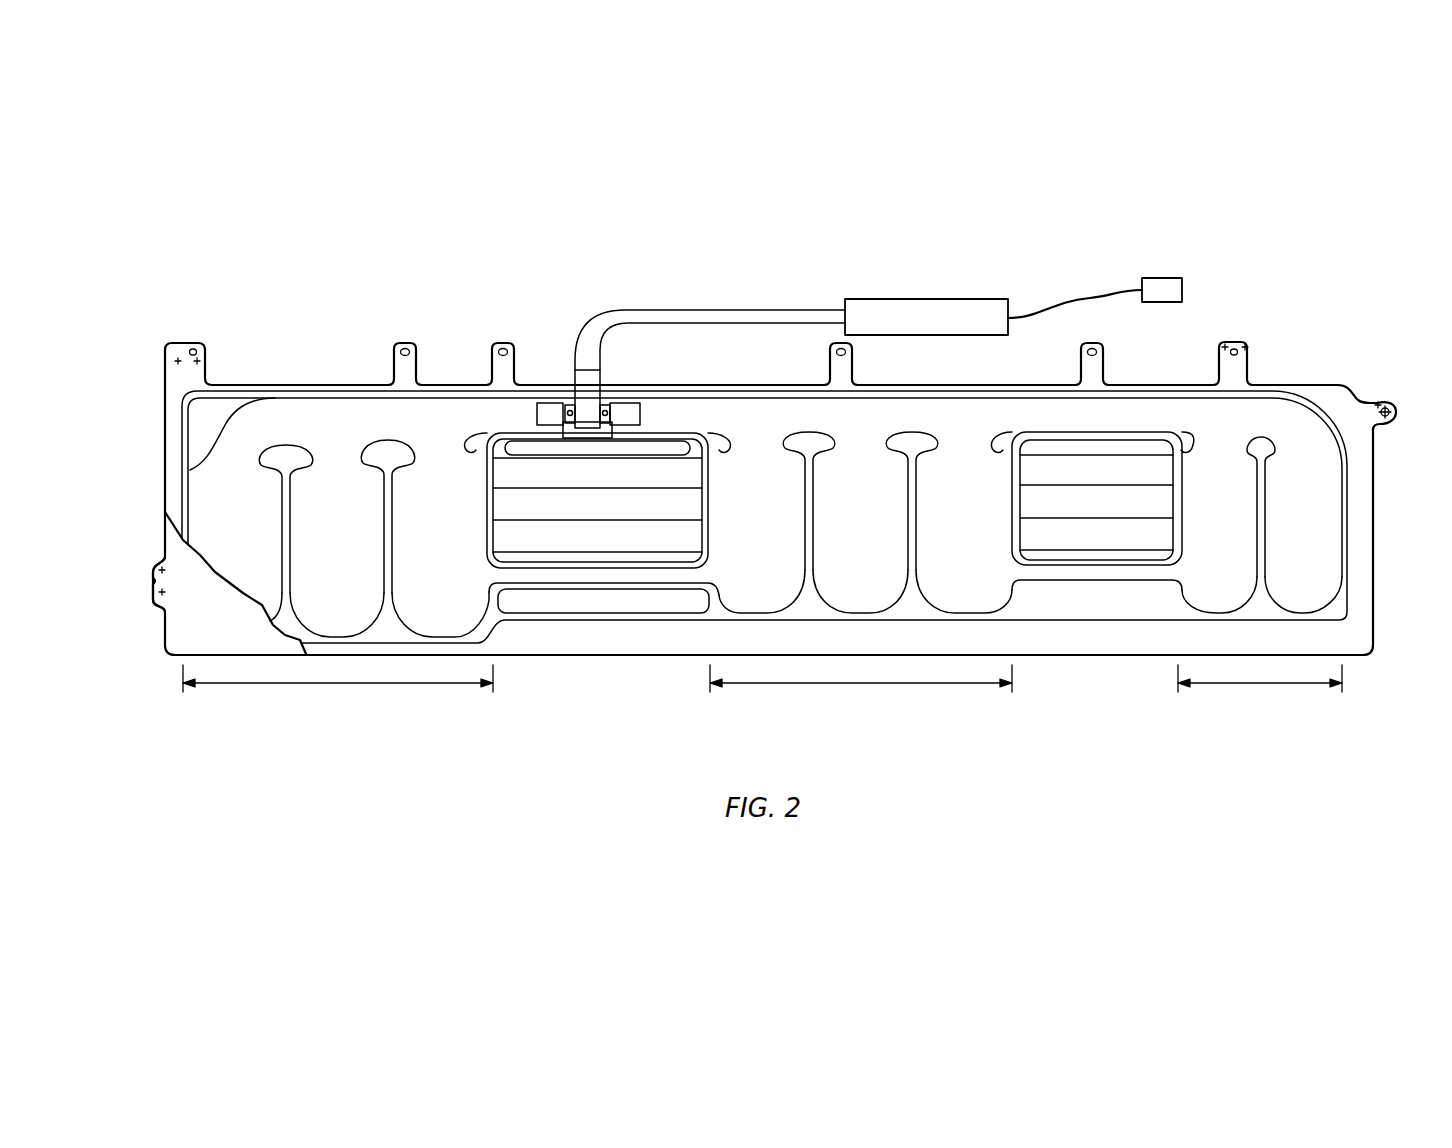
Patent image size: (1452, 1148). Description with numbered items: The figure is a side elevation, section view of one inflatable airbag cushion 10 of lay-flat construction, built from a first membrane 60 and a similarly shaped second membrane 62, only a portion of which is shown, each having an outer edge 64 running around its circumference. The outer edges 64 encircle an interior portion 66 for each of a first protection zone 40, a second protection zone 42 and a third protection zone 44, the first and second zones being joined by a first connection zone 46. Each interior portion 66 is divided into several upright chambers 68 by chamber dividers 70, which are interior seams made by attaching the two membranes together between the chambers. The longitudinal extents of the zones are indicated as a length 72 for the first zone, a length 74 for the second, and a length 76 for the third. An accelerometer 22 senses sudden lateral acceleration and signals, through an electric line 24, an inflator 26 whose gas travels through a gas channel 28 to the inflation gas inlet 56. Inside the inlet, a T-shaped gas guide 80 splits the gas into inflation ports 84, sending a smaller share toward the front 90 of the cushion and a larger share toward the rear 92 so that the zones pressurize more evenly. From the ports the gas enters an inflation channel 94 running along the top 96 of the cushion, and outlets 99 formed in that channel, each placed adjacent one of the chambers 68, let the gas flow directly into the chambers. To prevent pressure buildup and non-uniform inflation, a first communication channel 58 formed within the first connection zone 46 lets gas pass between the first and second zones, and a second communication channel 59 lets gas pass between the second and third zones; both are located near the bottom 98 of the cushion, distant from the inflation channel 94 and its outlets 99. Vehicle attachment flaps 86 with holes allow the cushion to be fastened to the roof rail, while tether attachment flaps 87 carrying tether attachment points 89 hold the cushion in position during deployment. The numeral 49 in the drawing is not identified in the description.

The cushion 10 is at (573, 684).
The accelerometer 22 is at (1162, 283).
The electric line 24 is at (1083, 298).
The inflator 26 is at (933, 312).
The gas channel 28 is at (737, 312).
The first protection zone 40 is at (338, 705).
The second protection zone 42 is at (861, 701).
The third protection zone 44 is at (1244, 701).
The first connection zone 46 is at (591, 511).
The second reservoir 49 is at (1081, 511).
The inflation gas inlet 56 is at (569, 408).
The first communication channel 58 is at (557, 580).
The second communication channel 59 is at (1103, 580).
The first membrane 60 is at (336, 408).
The second membrane 62 is at (212, 622).
The outer edge 64 is at (243, 382).
The interior portion 66 is at (325, 576).
The chamber 68 is at (223, 541).
The chamber divider 70 is at (292, 500).
The length of first protection zone 72 is at (270, 684).
The length of second protection zone 74 is at (878, 684).
The length of third protection zone 76 is at (1262, 684).
The gas guide 80 is at (599, 378).
The inflation port 84 is at (539, 412).
The vehicle attachment flap 86 is at (182, 347).
The tether attachment flap 87 is at (852, 353).
The tether attachment point 89 is at (196, 348).
The front of the airbag cushion 90 is at (156, 362).
The rear of the airbag cushion 92 is at (1387, 492).
The inflation channel 94 is at (282, 415).
The top of the airbag cushion 96 is at (688, 395).
The bottom of the cushion 98 is at (647, 658).
The outlet 99 is at (234, 460).